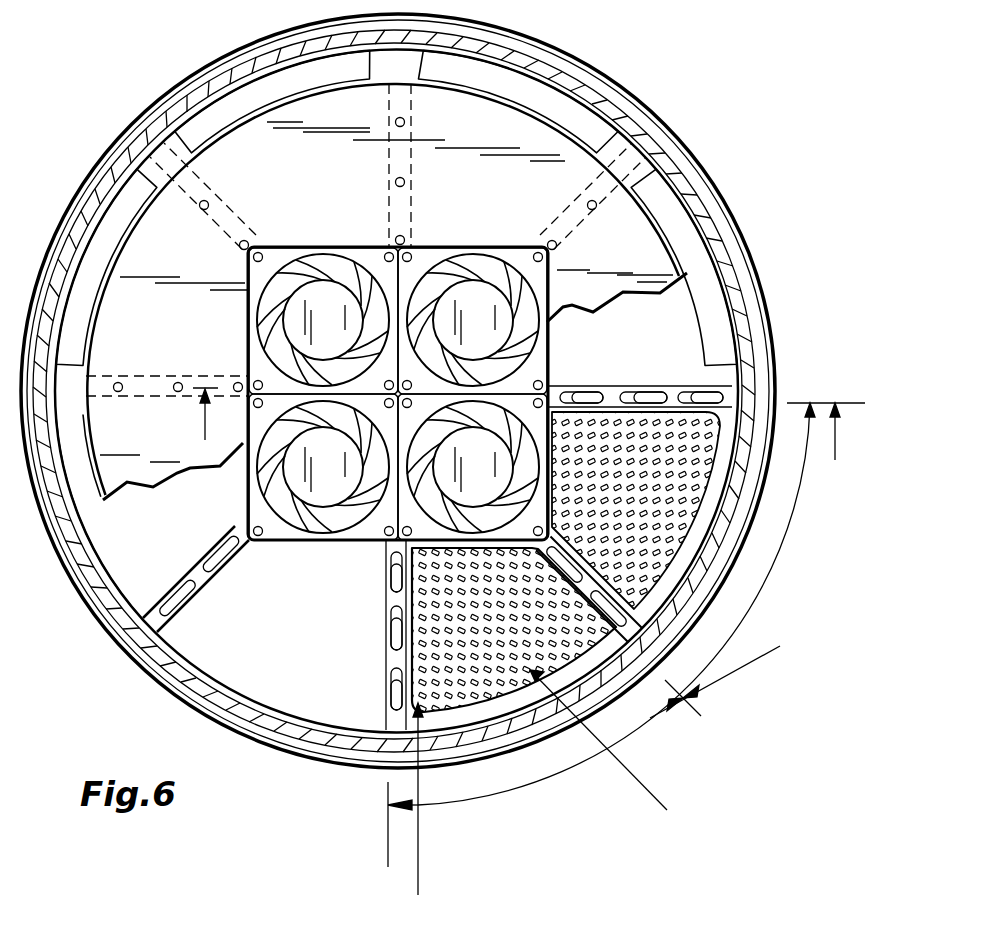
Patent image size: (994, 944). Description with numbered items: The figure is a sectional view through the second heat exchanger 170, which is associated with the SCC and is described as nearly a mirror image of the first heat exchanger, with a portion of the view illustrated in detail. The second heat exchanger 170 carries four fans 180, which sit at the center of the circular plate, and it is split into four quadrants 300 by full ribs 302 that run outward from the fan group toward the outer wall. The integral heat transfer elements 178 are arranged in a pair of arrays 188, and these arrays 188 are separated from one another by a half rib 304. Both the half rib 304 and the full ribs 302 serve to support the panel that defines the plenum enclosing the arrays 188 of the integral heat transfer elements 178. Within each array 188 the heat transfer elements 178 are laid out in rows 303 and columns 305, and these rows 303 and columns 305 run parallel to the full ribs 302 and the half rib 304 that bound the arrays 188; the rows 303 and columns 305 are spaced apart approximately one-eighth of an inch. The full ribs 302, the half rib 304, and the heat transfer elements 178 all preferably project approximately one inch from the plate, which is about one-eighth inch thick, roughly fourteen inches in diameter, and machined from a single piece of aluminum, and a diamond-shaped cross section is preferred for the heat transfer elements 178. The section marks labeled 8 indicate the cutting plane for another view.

The second heat exchanger 170 is at (586, 67).
The quadrant 300 is at (197, 250).
The full rib 302 is at (413, 165).
The fan 180 is at (340, 307).
The integral heat transfer element 178 is at (388, 606).
The section line 8 is at (515, 435).
The array 188 is at (771, 562).
The row 303 is at (420, 884).
The half rib 304 is at (655, 636).
The column 305 is at (645, 790).